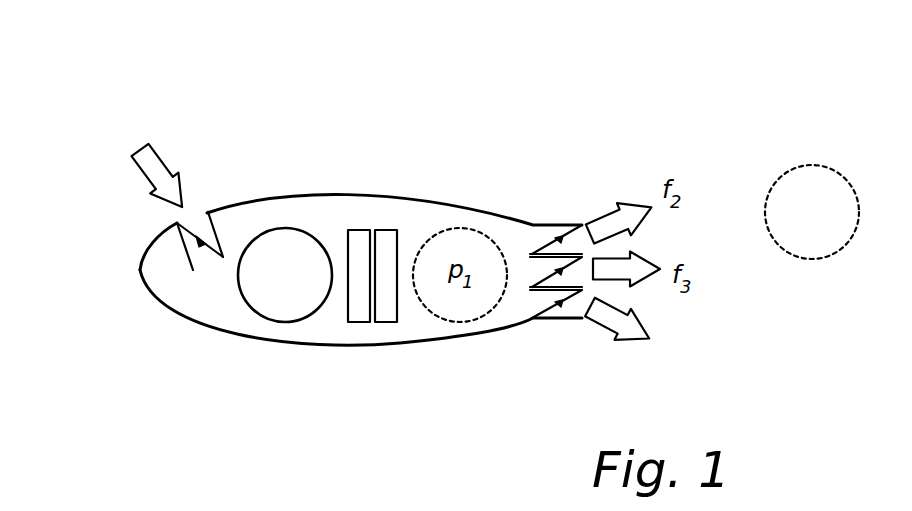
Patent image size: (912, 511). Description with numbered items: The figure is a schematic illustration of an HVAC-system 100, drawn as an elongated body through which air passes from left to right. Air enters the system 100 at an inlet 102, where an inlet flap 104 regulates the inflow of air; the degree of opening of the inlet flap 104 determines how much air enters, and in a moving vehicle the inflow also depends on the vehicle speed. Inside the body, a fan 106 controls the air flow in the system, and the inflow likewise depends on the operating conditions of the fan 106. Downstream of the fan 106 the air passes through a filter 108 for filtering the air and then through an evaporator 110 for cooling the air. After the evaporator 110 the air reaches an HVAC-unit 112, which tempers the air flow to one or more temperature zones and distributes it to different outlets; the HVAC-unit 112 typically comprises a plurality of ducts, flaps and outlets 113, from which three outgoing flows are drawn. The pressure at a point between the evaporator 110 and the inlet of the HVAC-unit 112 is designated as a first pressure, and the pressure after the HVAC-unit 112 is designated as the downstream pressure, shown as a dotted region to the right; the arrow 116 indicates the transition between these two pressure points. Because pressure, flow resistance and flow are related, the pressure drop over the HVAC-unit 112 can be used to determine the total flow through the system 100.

The HVAC-system 100 is at (255, 109).
The inlet 102 is at (187, 222).
The inlet flap 104 is at (178, 225).
The fan 106 is at (293, 227).
The filter 108 is at (358, 322).
The evaporator 110 is at (385, 322).
The HVAC-unit 112 is at (562, 322).
The outlets 113 is at (645, 298).
The transition between p1 and p0 116 is at (785, 163).